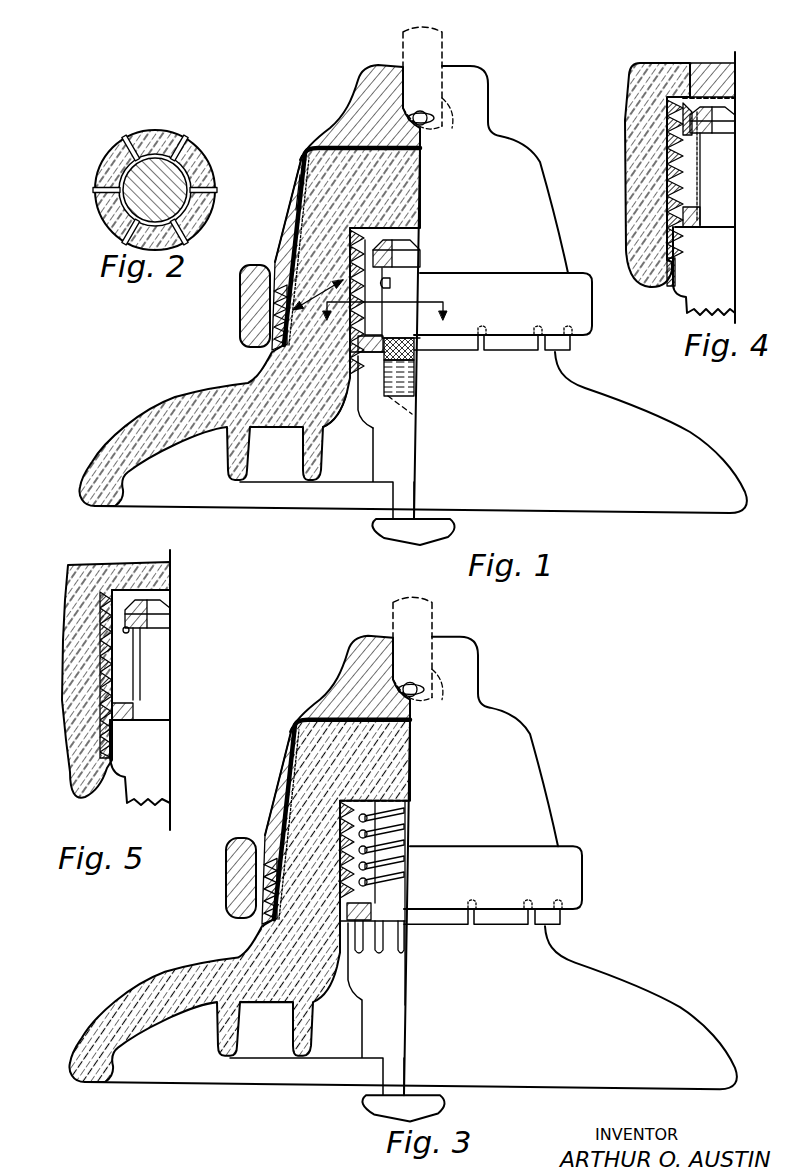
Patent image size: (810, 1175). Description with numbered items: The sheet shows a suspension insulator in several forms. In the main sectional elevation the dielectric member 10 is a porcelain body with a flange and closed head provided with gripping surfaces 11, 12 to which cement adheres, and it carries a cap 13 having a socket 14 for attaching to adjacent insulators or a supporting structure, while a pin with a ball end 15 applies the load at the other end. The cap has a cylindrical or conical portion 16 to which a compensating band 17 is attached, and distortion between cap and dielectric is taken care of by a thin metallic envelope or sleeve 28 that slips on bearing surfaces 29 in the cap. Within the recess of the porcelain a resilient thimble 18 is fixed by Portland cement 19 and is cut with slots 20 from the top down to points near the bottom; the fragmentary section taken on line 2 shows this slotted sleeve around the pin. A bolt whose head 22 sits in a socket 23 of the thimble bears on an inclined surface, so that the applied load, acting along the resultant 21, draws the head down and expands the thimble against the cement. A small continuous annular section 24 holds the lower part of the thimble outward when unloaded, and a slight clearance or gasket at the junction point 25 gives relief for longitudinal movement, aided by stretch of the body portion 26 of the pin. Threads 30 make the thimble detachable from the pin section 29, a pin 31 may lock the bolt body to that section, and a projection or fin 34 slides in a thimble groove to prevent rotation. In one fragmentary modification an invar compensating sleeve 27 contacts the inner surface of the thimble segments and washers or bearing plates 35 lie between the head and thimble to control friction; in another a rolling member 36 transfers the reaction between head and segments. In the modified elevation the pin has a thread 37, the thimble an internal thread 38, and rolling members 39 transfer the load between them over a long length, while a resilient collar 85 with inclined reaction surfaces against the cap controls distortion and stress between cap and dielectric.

In FIG. 1, the section line 2— 2 is at (377, 305).
In FIG. 1, the dielectric member 10 is at (316, 143).
In FIG. 1, the gripping surface 11 is at (381, 283).
In FIG. 1, the gripping surface 12 is at (284, 346).
In FIG. 1, the cap 13 is at (527, 168).
In FIG. 1, the socket 14 is at (398, 92).
In FIG. 1, the ball end 15 is at (448, 528).
In FIG. 1, the cylindrical or conical portion 16 is at (284, 241).
In FIG. 1, the compensating band 17 is at (270, 272).
In FIG. 1, the resilient thimble 18 is at (350, 250).
In FIG. 2, the resilient thimble 18 is at (148, 137).
In FIG. 4, the resilient thimble 18 is at (686, 156).
In FIG. 5, the resilient thimble 18 is at (116, 650).
In FIG. 1, the Portland cement 19 is at (350, 272).
In FIG. 1, the slots 20 is at (306, 202).
In FIG. 2, the slots 20 is at (96, 190).
In FIG. 1, the resultant 21 is at (318, 352).
In FIG. 1, the head 22 is at (418, 244).
In FIG. 4, the head 22 is at (697, 110).
In FIG. 5, the head 22 is at (168, 625).
In FIG. 1, the socket 23 is at (421, 230).
In FIG. 1, the continuous annular section 24 is at (378, 335).
In FIG. 1, the junction point 25 is at (418, 389).
In FIG. 1, the body portion of the pin 26 is at (412, 283).
In FIG. 4, the body portion of the pin 26 is at (726, 220).
In FIG. 4, the compensating sleeve 27 is at (701, 206).
In FIG. 1, the thin metallic envelope or sleeve 28 is at (257, 297).
In FIG. 1, the pin section 29 is at (400, 452).
In FIG. 4, the pin section 29 is at (690, 292).
In FIG. 1, the threads 30 is at (416, 352).
In FIG. 1, the pin 31 is at (384, 370).
In FIG. 1, the projection or fin 34 is at (418, 262).
In FIG. 4, the washers or bearing plates 35 is at (678, 120).
In FIG. 5, the rolling member 36 is at (122, 632).
In FIG. 3, the thread on the pin 37 is at (400, 834).
In FIG. 3, the internal thread of the thimble 38 is at (400, 864).
In FIG. 3, the rolling members 39 is at (380, 807).
In FIG. 3, the resilient collar 85 is at (226, 893).